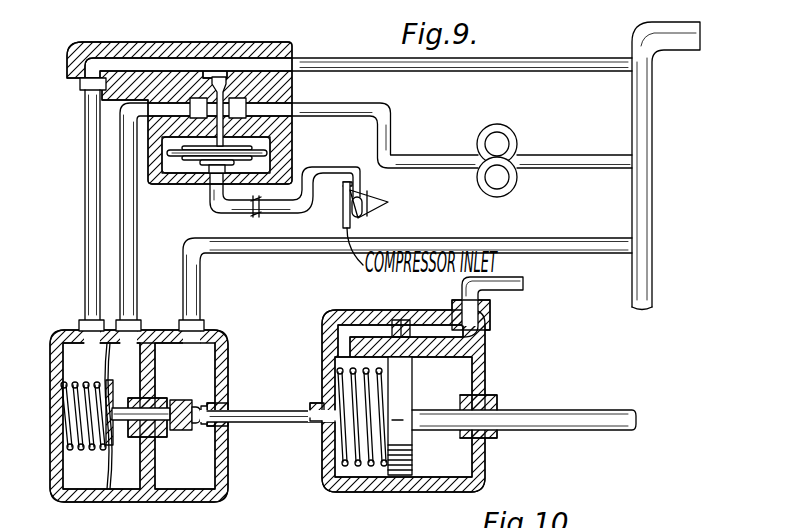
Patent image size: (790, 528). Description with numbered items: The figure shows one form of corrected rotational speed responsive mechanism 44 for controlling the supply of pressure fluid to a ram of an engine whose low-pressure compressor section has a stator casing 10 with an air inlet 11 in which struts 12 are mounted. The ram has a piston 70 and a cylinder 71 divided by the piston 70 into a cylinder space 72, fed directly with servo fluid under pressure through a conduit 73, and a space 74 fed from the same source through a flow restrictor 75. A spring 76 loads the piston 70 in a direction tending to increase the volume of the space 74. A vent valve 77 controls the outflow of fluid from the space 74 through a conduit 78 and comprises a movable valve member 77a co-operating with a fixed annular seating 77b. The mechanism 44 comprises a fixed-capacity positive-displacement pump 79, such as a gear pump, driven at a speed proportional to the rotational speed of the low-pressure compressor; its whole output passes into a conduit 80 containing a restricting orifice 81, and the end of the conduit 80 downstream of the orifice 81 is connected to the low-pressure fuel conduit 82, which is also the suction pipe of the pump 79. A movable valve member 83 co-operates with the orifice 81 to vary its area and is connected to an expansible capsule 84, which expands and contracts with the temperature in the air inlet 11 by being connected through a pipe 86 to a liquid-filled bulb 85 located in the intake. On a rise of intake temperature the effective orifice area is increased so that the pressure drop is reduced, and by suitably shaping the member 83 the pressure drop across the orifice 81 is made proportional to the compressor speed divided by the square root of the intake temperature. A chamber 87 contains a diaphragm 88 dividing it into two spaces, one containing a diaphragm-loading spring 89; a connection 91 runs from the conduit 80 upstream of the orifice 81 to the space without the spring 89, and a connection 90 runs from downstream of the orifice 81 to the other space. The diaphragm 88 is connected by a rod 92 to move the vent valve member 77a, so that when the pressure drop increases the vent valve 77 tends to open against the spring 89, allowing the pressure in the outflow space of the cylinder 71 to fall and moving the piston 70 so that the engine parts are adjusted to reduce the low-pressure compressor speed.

The stator casing 10 is at (385, 198).
The air inlet 11 is at (343, 214).
The struts 12 is at (352, 229).
The corrected rotational speed responsive mechanism 44 is at (596, 320).
The piston 70 is at (415, 459).
The cylinder 71 is at (405, 472).
The cylinder space 72 is at (450, 382).
The conduit 73 is at (515, 288).
The space 74 is at (343, 362).
The flow restrictor 75 is at (399, 329).
The spring 76 is at (343, 460).
The vent valve 77 is at (200, 431).
The movable valve member 77a is at (198, 405).
The fixed annular seating 77b is at (206, 403).
The conduit 78 is at (267, 432).
The fixed-capacity positive-displacement pump 79 is at (518, 135).
The conduit 80 is at (440, 73).
The restricting orifice 81 is at (229, 98).
The low-pressure fuel conduit 82 is at (656, 165).
The movable valve member 83 is at (218, 76).
The expansible capsule 84 is at (197, 166).
The liquid-filled bulb 85 is at (363, 206).
The pipe 86 is at (246, 213).
The chamber 87 is at (68, 346).
The diaphragm 88 is at (110, 462).
The diaphragm-loading spring 89 is at (92, 452).
The connection 90 is at (100, 242).
The connection 91 is at (136, 265).
The rod 92 is at (160, 431).